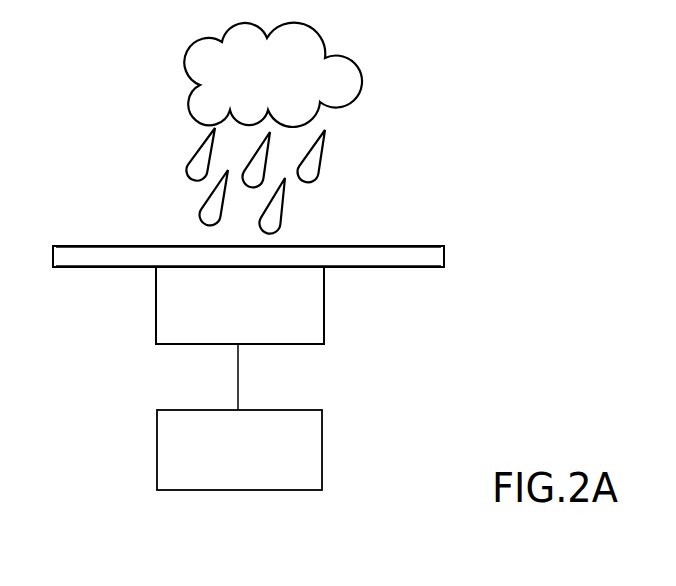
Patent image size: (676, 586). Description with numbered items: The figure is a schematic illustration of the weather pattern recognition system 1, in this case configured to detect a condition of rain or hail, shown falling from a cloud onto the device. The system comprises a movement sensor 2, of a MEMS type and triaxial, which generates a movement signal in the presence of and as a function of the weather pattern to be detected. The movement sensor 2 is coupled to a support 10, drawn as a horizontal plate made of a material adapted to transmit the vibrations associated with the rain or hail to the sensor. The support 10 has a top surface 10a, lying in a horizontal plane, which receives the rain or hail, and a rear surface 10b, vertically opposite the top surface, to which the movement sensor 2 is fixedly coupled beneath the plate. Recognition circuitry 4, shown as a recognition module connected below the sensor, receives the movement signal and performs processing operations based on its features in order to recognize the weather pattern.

The weather pattern recognition system 1 is at (125, 373).
The movement sensor 2 is at (170, 318).
The recognition circuitry 4 is at (315, 446).
The support 10 is at (435, 257).
The top surface 10a is at (410, 247).
The rear surface 10b is at (413, 270).